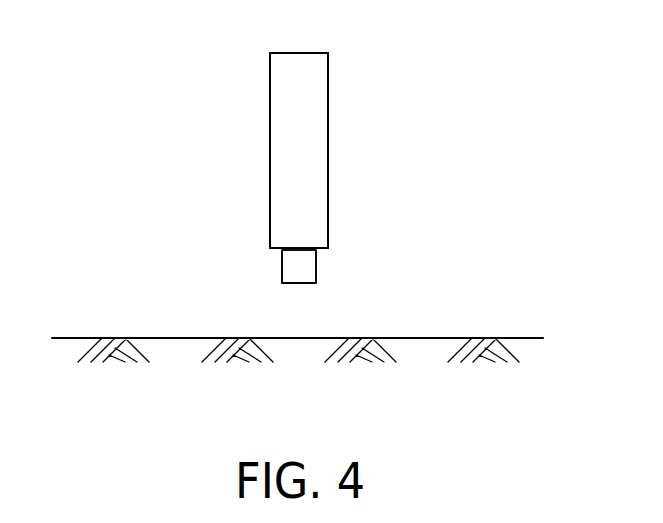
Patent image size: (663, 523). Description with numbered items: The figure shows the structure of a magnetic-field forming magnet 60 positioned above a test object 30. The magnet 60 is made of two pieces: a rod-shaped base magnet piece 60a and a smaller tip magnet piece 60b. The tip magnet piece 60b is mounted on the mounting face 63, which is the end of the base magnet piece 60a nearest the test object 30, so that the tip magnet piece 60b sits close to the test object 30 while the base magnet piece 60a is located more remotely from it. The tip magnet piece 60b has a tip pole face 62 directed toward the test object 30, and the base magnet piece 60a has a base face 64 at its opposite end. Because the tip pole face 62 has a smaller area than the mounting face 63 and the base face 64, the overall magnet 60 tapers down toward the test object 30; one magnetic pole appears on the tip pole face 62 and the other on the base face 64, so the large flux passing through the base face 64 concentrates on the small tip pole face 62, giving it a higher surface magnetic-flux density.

The test object 30 is at (437, 338).
The magnetic-field forming magnet 60 is at (357, 143).
The base magnet piece 60a is at (278, 160).
The tip magnet piece 60b is at (293, 263).
The tip pole face 62 is at (304, 283).
The mounting face 63 is at (323, 248).
The base face 64 is at (307, 53).